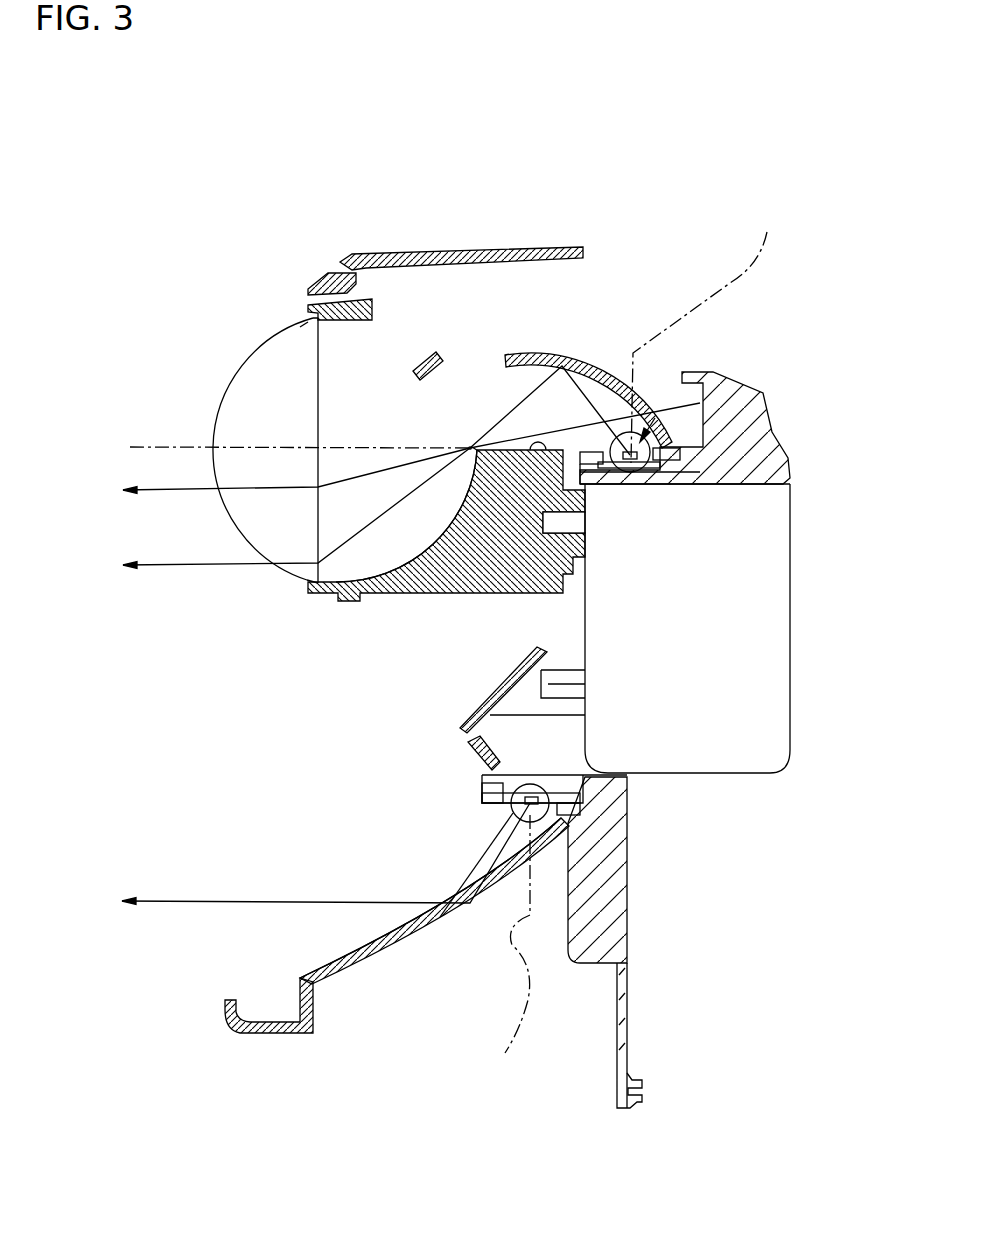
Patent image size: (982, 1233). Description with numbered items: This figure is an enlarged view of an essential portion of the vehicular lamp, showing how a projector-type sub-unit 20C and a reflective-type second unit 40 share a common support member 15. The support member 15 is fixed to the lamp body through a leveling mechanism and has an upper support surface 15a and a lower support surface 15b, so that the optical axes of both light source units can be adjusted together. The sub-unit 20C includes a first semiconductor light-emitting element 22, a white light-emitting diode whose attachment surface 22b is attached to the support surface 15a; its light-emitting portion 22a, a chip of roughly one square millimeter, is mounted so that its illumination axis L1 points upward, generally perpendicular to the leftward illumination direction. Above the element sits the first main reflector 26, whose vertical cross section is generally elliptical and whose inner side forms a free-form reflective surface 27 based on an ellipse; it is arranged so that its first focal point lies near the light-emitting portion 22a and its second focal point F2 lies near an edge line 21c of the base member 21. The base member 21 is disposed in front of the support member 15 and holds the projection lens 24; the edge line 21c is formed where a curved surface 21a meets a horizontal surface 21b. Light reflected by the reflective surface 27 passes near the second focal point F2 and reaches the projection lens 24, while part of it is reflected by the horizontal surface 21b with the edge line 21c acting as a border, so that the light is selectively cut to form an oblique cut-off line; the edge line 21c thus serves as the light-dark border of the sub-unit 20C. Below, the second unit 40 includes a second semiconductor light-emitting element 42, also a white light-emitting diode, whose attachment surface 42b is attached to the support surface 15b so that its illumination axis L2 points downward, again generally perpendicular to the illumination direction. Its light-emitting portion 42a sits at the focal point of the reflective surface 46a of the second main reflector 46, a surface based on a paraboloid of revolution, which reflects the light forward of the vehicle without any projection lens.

The sub-unit 20C is at (180, 389).
The projection lens 24 is at (273, 390).
The base member 21 is at (450, 605).
The curved surface 21a is at (445, 530).
The horizontal surface 21b is at (587, 522).
The edge line 21c is at (470, 446).
The second focal point F2 is at (466, 447).
The reflective surface 27 is at (582, 362).
The illumination axis L1 is at (705, 336).
The first main reflector 26 is at (656, 370).
The first semiconductor light-emitting element 22 is at (705, 404).
The light-emitting portion 22a is at (632, 462).
The attachment surface 22b is at (614, 474).
The support member 15 is at (642, 830).
The support surface 15a is at (668, 485).
The support surface 15b is at (605, 779).
The second unit 40 is at (360, 828).
The second semiconductor light-emitting element 42 is at (532, 826).
The light-emitting portion 42a is at (532, 798).
The attachment surface 42b is at (510, 793).
The illumination axis L2 is at (509, 949).
The second main reflector 46 is at (432, 955).
The reflective surface 46a is at (415, 925).